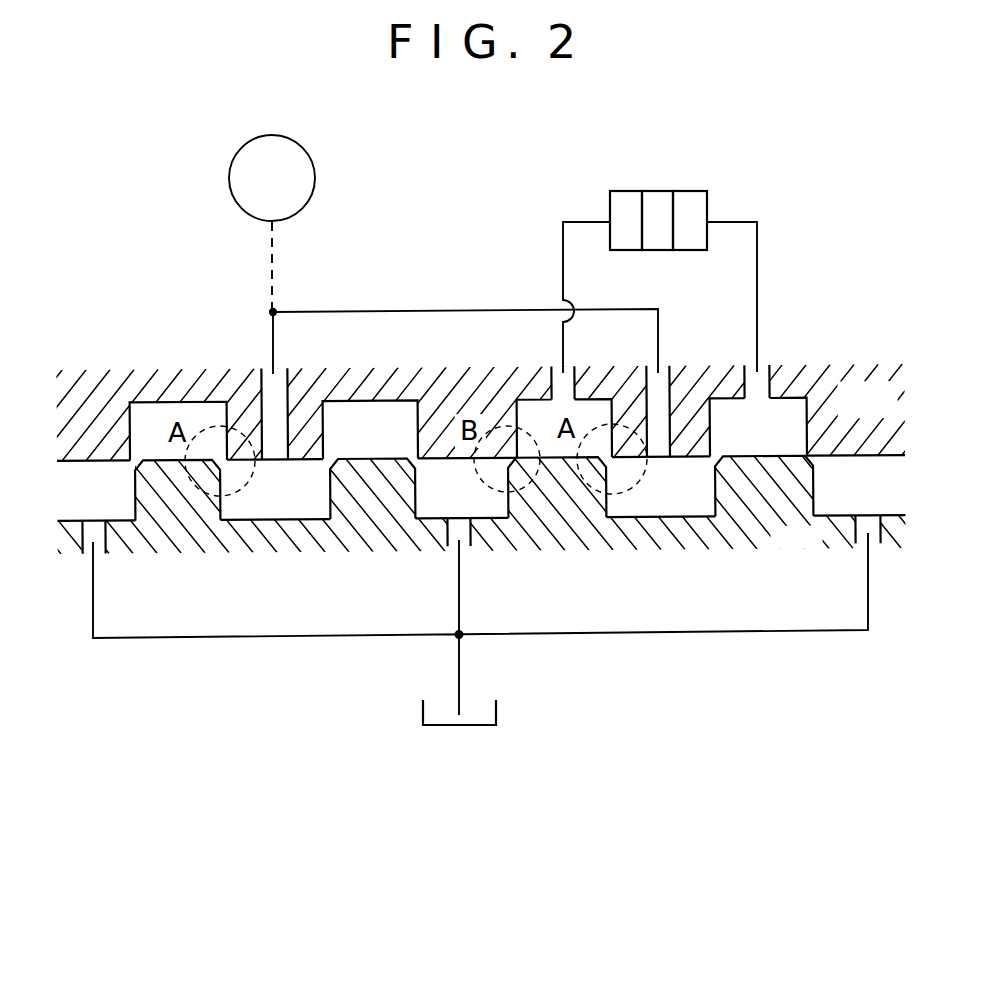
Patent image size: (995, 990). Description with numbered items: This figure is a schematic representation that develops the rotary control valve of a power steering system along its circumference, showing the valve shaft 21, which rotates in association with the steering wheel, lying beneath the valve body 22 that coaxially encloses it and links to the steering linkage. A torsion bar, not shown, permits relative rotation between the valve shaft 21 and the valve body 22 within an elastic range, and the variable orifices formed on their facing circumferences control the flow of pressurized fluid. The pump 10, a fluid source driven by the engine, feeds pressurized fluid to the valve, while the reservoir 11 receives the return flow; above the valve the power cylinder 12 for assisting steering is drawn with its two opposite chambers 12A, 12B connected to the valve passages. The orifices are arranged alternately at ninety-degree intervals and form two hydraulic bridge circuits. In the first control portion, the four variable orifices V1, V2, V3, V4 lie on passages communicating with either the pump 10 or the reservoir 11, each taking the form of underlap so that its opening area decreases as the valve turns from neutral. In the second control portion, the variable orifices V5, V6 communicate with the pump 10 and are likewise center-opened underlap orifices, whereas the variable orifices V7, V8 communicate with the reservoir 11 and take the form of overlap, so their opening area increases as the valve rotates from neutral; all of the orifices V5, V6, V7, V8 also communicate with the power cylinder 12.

The pump 10 is at (277, 148).
The reservoir 11 is at (470, 727).
The power cylinder 12 is at (658, 184).
The chamber 12A is at (619, 210).
The chamber 12B is at (698, 207).
The valve shaft 21 is at (497, 524).
The valve body 22 is at (497, 393).
The variable orifice V1 is at (235, 559).
The variable orifice V2 is at (317, 559).
The variable orifice V3 is at (141, 458).
The variable orifice V4 is at (411, 458).
The variable orifice V5 is at (615, 558).
The variable orifice V6 is at (818, 558).
The variable orifice V7 is at (541, 458).
The variable orifice V8 is at (760, 405).